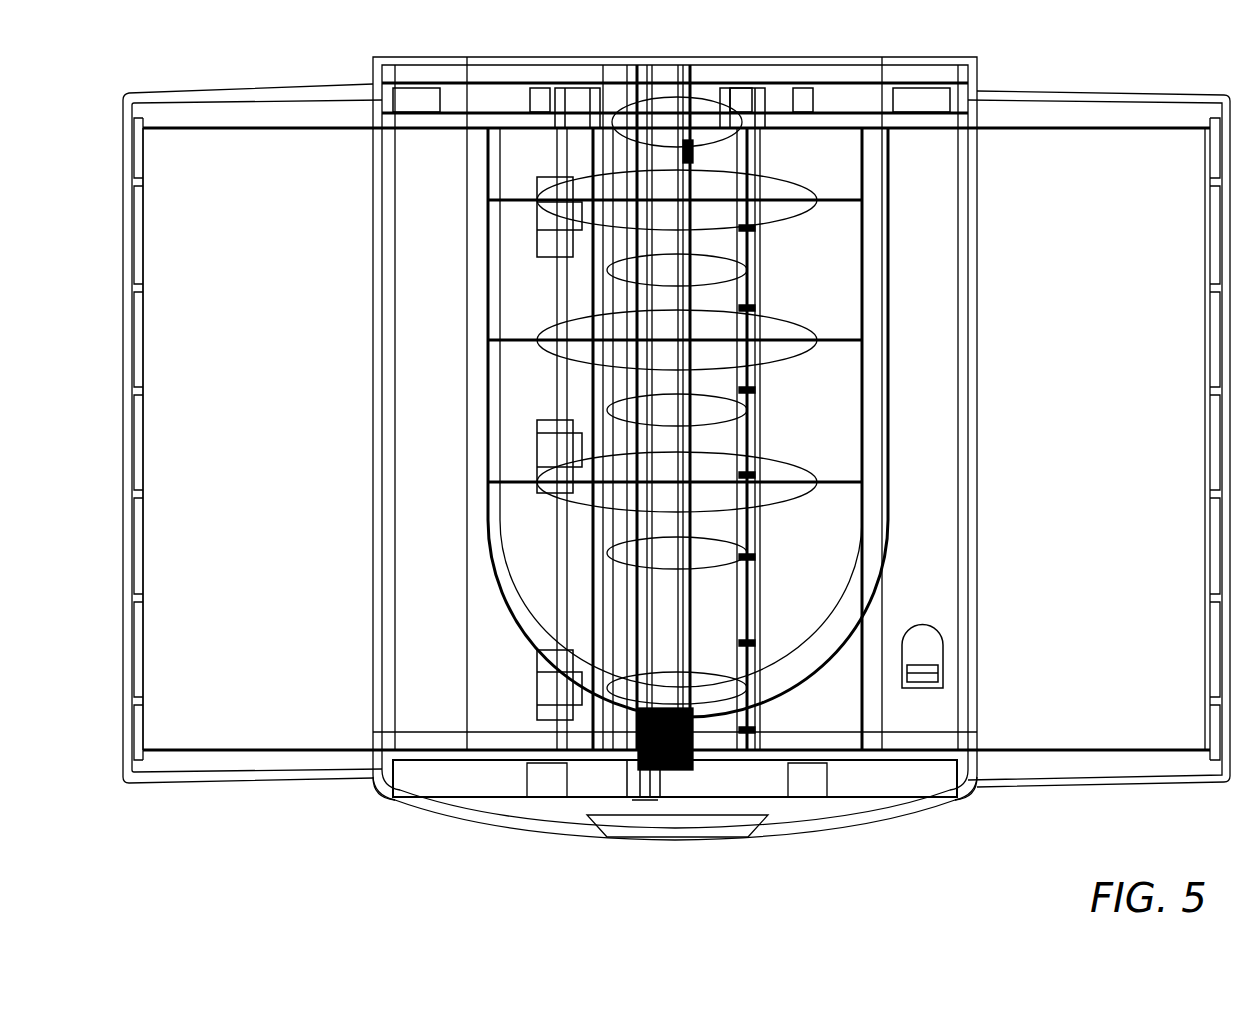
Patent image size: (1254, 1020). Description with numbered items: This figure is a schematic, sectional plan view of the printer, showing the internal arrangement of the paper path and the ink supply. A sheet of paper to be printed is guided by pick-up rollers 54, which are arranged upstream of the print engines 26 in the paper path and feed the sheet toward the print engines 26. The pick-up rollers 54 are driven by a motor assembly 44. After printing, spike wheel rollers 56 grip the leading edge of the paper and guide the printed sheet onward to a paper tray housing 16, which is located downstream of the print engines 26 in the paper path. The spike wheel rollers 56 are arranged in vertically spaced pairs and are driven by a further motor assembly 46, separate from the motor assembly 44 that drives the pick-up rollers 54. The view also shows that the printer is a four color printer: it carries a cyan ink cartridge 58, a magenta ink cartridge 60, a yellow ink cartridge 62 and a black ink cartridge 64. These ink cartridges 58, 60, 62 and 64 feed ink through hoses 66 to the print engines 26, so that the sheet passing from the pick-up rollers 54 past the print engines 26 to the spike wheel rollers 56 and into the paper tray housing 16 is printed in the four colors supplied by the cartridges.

The paper tray housing 16 is at (1083, 114).
The print engines 26 is at (662, 137).
The motor assembly 44 is at (587, 100).
The further motor assembly 46 is at (765, 100).
The pick-up rollers 54 is at (555, 218).
The spike wheel rollers 56 is at (750, 228).
The cyan ink cartridge 58 is at (830, 152).
The magenta ink cartridge 60 is at (830, 245).
The yellow ink cartridge 62 is at (830, 405).
The black ink cartridge 64 is at (808, 530).
The hoses 66 is at (650, 770).